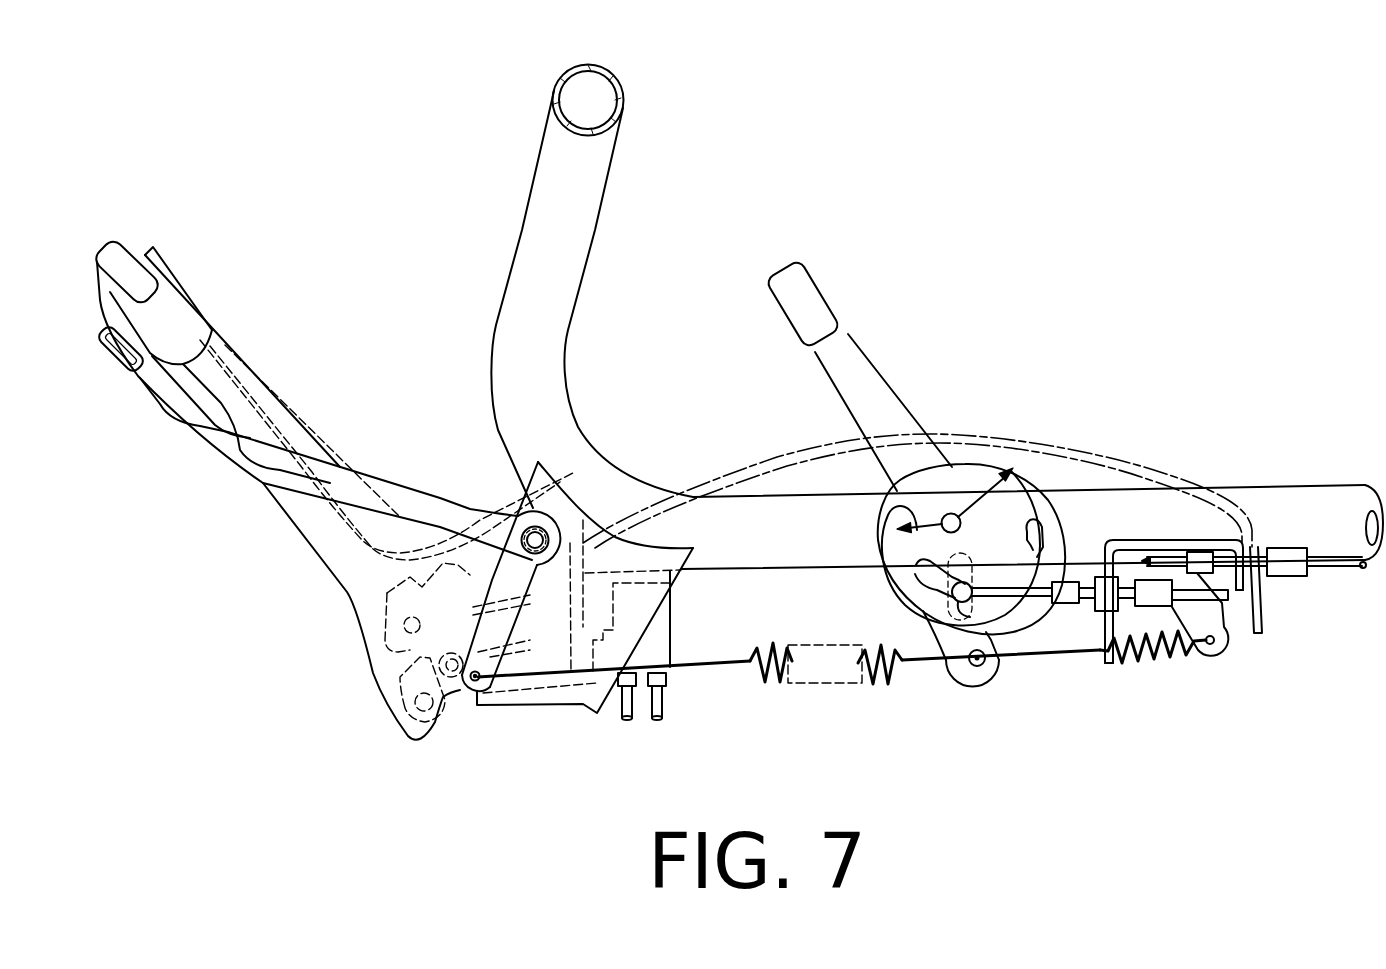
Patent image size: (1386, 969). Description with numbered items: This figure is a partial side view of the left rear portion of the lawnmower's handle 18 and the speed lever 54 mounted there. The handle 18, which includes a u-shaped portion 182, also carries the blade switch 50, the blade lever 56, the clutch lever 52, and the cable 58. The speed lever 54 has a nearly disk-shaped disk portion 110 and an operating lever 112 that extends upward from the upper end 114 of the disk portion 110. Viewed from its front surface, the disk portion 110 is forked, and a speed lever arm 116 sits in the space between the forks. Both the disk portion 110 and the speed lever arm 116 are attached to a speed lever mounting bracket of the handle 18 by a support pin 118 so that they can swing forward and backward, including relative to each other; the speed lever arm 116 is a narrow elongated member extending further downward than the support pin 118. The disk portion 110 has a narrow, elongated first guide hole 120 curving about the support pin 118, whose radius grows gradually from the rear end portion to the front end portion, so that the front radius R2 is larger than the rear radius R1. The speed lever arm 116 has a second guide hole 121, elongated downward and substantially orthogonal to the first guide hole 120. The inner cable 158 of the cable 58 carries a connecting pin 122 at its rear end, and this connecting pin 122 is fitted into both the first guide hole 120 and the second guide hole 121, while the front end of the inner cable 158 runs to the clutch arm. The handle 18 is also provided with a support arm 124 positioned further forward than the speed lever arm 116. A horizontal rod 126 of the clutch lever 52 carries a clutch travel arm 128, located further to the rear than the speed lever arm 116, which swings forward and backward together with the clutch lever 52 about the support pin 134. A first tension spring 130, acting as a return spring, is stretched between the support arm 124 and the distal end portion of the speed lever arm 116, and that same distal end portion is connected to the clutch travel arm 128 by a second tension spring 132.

The handle 18 is at (1296, 497).
The blade switch 50 is at (112, 244).
The clutch lever 52 is at (160, 410).
The speed lever 54 is at (809, 256).
The blade lever 56 is at (240, 353).
The cable 58 is at (1217, 593).
The disk portion 110 is at (1057, 513).
The operating lever 112 is at (837, 358).
The upper end 114 is at (893, 442).
The speed lever arm 116 is at (998, 642).
The support pin 118 is at (949, 513).
The first guide hole 120 is at (1044, 538).
The second guide hole 121 is at (953, 647).
The connecting pin 122 is at (920, 586).
The support arm 124 is at (1223, 627).
The horizontal rod 126 is at (500, 538).
The clutch travel arm 128 is at (480, 625).
The first tension spring 130 is at (1152, 655).
The second tension spring 132 is at (770, 683).
The support pin 134 is at (583, 520).
The inner cable 158 is at (1018, 597).
The u-shaped portion 182 is at (612, 72).
The radius of rear end portion R1 is at (893, 508).
The radius of front end portion R2 is at (1011, 465).